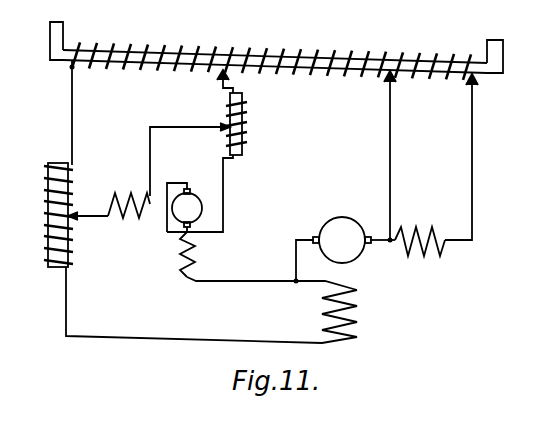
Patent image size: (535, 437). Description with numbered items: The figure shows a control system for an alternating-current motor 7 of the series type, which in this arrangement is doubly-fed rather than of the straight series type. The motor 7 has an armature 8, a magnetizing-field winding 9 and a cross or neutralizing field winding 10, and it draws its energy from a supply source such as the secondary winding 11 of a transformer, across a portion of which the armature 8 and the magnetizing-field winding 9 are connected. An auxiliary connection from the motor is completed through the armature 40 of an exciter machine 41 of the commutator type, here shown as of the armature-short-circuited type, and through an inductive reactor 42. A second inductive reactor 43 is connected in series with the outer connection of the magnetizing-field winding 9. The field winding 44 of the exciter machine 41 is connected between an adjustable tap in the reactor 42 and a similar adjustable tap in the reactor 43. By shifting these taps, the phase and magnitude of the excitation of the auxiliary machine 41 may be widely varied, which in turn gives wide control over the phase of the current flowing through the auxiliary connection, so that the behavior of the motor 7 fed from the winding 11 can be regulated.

The secondary winding 11 is at (294, 52).
The inductive reactor 42 is at (242, 127).
The field winding 44 is at (127, 193).
The armature 40 is at (195, 201).
The exciter machine 41 is at (157, 260).
The inductive reactor 43 is at (68, 238).
The armature 8 is at (339, 226).
The cross field winding 10 is at (424, 232).
The motor 7 is at (385, 292).
The magnetizing-field winding 9 is at (357, 322).